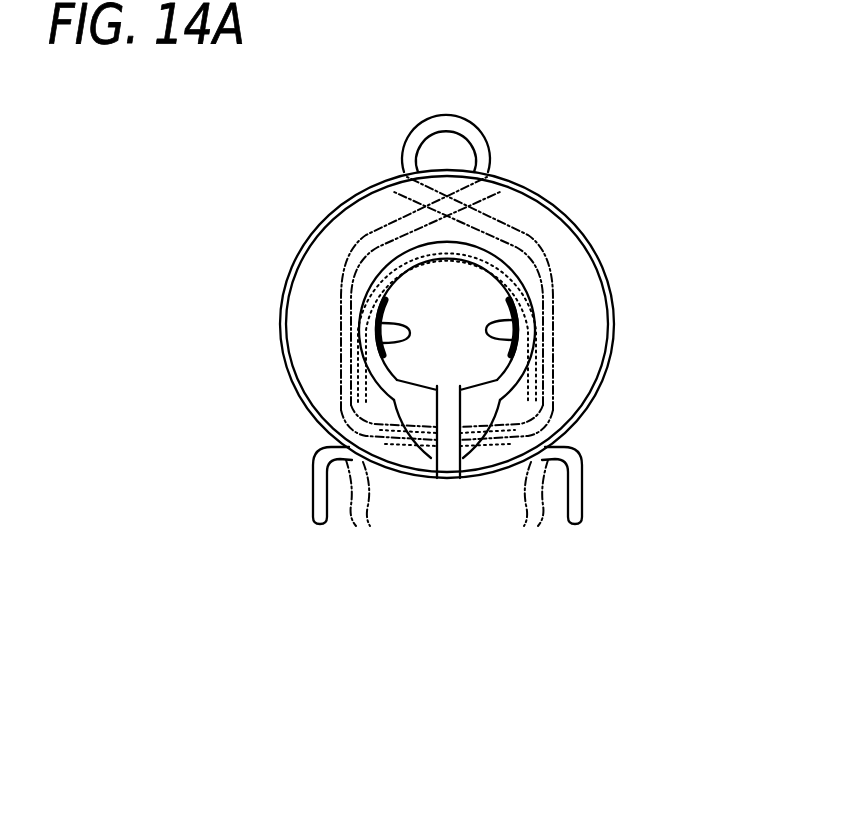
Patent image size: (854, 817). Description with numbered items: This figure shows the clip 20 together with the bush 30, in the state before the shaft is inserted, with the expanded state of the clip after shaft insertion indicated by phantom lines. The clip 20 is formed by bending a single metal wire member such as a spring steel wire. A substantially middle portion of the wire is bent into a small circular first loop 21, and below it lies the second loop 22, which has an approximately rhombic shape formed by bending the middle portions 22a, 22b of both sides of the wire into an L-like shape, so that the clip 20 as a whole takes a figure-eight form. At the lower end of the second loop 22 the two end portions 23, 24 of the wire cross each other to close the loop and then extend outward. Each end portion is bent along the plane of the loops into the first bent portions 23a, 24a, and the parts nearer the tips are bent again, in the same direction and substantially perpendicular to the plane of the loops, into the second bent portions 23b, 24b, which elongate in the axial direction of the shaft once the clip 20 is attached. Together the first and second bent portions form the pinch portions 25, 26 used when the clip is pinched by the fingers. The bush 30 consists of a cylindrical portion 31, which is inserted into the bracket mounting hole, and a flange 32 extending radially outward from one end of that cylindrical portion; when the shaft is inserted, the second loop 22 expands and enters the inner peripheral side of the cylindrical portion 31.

The clip 20 is at (537, 139).
The first loop 21 is at (382, 136).
The second loop 22 is at (418, 291).
The middle portion 22a is at (490, 334).
The middle portion 22b is at (383, 348).
The end portion 23 is at (300, 403).
The first bent portion 23a is at (312, 479).
The second bent portion 23b is at (312, 521).
The end portion 24 is at (565, 412).
The first bent portion 24a is at (585, 474).
The second bent portion 24b is at (585, 516).
The pinch portion 25 is at (193, 449).
The pinch portion 26 is at (688, 449).
The bush 30 is at (600, 203).
The cylindrical portion 31 is at (540, 358).
The flange 32 is at (600, 262).